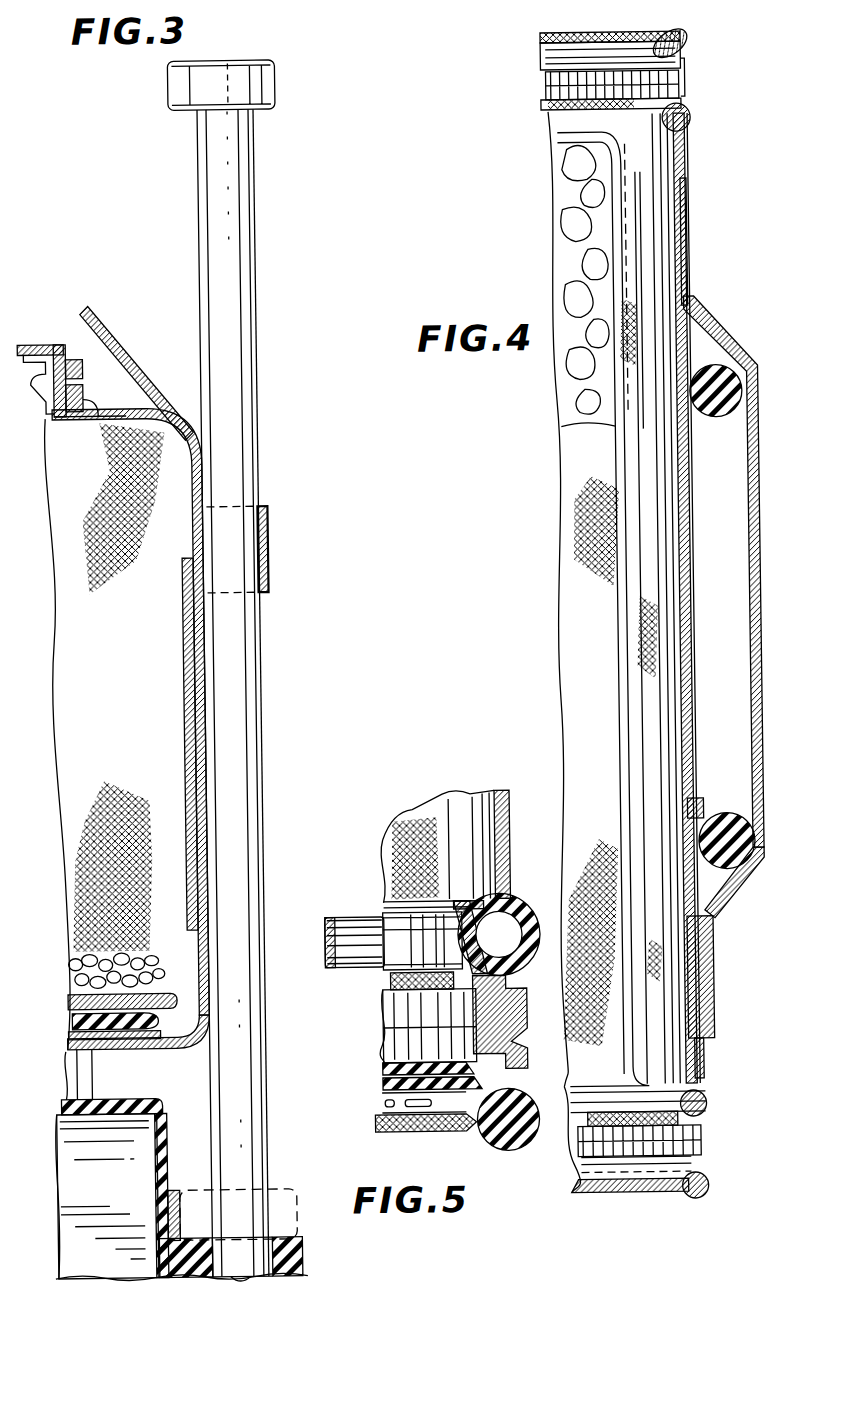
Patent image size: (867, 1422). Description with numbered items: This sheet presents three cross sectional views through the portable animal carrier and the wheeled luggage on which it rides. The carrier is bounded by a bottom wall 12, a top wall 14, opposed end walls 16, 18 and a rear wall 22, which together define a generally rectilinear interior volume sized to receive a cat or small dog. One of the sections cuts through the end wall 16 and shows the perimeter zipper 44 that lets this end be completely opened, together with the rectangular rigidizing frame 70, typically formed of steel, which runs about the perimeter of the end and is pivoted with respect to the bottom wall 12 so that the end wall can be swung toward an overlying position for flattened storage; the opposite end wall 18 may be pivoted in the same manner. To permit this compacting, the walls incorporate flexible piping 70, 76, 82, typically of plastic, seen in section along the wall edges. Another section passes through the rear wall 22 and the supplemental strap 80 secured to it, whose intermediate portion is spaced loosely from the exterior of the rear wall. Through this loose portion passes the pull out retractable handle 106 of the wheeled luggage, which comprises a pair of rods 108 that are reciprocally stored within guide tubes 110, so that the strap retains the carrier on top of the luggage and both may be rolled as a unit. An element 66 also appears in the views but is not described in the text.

In FIG. 3, the bottom wall 12 is at (153, 1048).
In FIG. 3, the top wall 14 is at (116, 410).
In FIG. 4, the end wall 16 is at (689, 1133).
In FIG. 5, the end wall 16 is at (396, 1133).
In FIG. 4, the end wall 18 is at (682, 90).
In FIG. 3, the rear wall 22 is at (200, 482).
In FIG. 4, the rear wall 22 is at (686, 1071).
In FIG. 5, the rear wall 22 is at (510, 837).
In FIG. 5, the perimeter zipper 44 is at (525, 1047).
In FIG. 3, the base support 66 is at (79, 1078).
In FIG. 4, the rigidizing frame 70 is at (690, 120).
In FIG. 5, the rigidizing frame 70 is at (521, 902).
In FIG. 4, the flexible piping 76 is at (693, 1188).
In FIG. 5, the flexible piping 76 is at (519, 1147).
In FIG. 3, the supplemental strap 80 is at (264, 553).
In FIG. 4, the supplemental strap 80 is at (751, 657).
In FIG. 4, the flexible piping 82 is at (682, 41).
In FIG. 3, the pull out retractable handle 106 is at (275, 87).
In FIG. 3, the rods 108 is at (221, 218).
In FIG. 4, the rods 108 is at (718, 420).
In FIG. 3, the guide tubes 110 is at (256, 654).